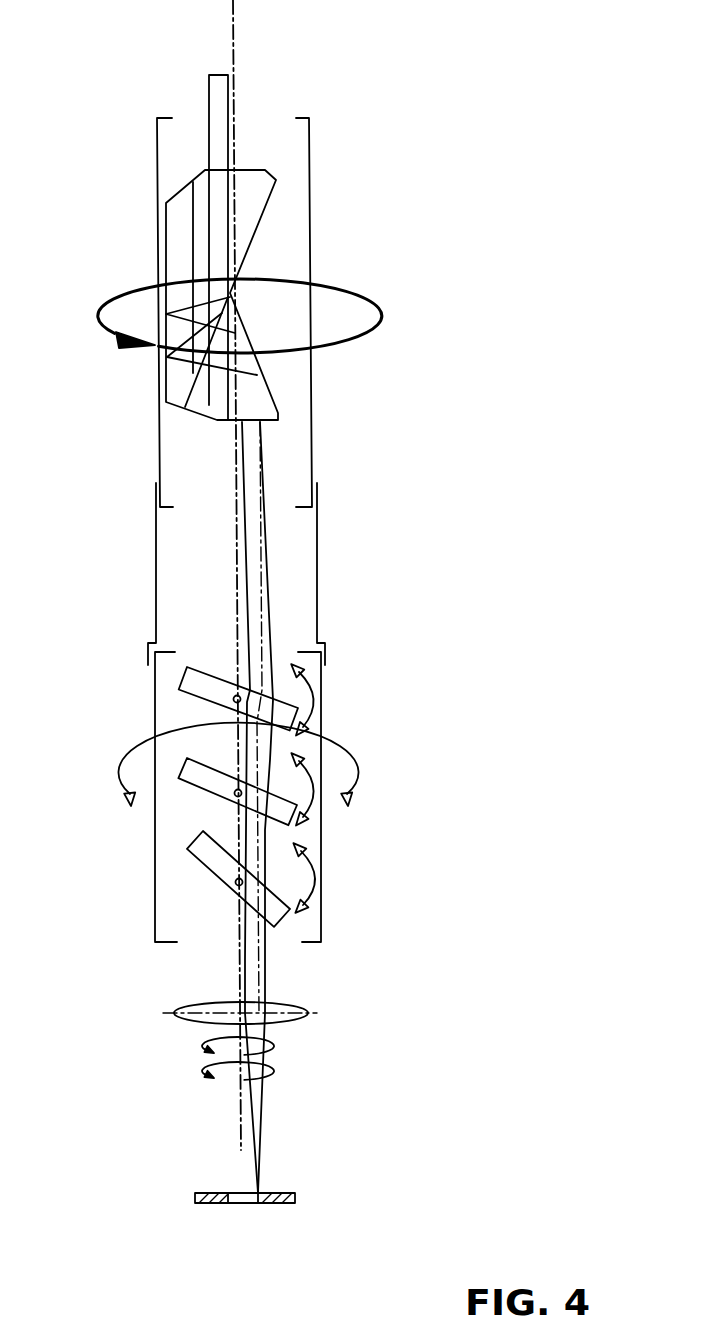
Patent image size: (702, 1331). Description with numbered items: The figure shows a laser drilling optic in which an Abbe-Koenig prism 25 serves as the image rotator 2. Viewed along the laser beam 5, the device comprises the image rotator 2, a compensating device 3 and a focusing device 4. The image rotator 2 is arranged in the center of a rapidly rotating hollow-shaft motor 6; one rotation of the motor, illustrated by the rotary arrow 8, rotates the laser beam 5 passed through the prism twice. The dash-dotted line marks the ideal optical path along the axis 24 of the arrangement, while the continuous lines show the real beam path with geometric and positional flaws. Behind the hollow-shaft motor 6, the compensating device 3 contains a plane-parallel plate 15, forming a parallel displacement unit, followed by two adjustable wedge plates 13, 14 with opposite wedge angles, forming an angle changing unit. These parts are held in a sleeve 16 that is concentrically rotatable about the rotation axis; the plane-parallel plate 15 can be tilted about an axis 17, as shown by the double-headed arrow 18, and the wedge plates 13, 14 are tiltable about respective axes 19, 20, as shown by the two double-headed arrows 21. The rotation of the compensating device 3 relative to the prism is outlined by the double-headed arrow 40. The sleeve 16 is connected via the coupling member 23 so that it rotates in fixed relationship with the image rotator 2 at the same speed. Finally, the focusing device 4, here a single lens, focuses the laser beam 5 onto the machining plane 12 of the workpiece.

The image rotator 2 is at (118, 181).
The compensating device 3 is at (98, 758).
The focusing device 4 is at (287, 1010).
The laser beam 5 is at (217, 98).
The hollow-shaft motor 6 is at (310, 212).
The rotary arrow 8 is at (117, 298).
The machining plane 12 is at (275, 1192).
The wedge plate 13 is at (202, 783).
The wedge plate 14 is at (193, 862).
The plane-parallel plate 15 is at (190, 673).
The sleeve 16 is at (323, 920).
The axis 17 is at (234, 700).
The double-headed arrow 18 is at (313, 692).
The axis 19 is at (235, 794).
The axis 20 is at (235, 884).
The double-headed arrow 21 is at (310, 802).
The coupling member 23 is at (318, 573).
The axis 24 is at (233, 35).
The Abbe-Koenig prism 25 is at (177, 237).
The double-headed arrow 40 is at (340, 757).